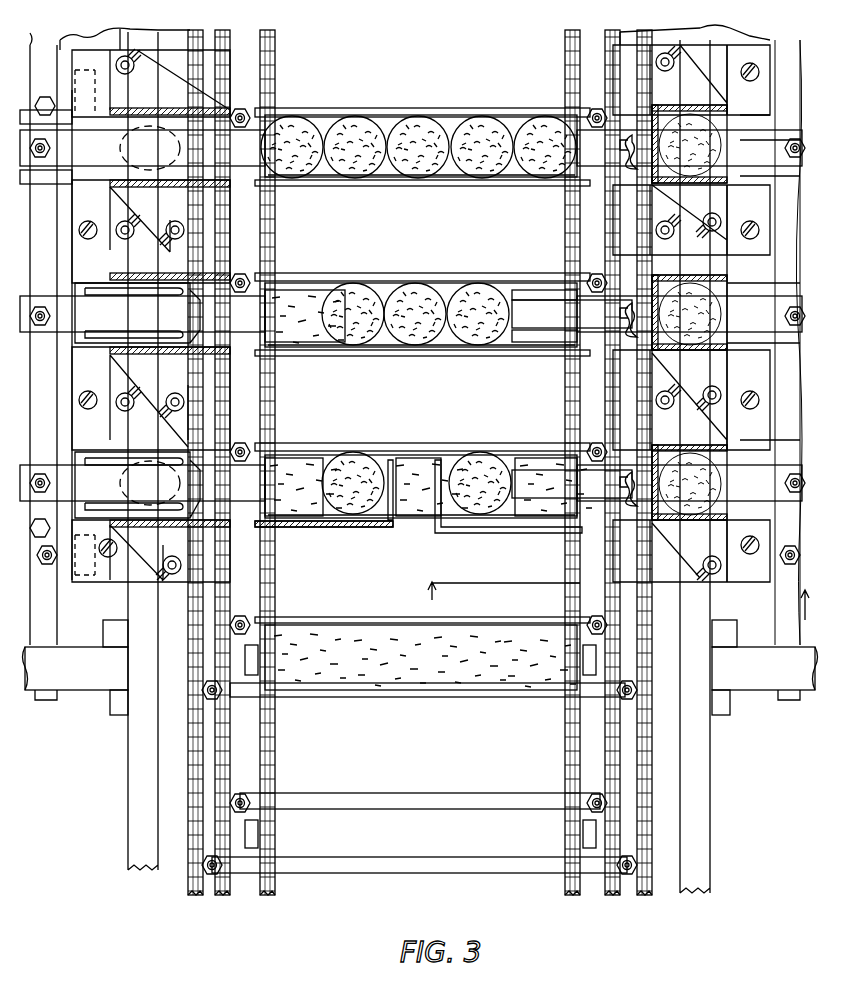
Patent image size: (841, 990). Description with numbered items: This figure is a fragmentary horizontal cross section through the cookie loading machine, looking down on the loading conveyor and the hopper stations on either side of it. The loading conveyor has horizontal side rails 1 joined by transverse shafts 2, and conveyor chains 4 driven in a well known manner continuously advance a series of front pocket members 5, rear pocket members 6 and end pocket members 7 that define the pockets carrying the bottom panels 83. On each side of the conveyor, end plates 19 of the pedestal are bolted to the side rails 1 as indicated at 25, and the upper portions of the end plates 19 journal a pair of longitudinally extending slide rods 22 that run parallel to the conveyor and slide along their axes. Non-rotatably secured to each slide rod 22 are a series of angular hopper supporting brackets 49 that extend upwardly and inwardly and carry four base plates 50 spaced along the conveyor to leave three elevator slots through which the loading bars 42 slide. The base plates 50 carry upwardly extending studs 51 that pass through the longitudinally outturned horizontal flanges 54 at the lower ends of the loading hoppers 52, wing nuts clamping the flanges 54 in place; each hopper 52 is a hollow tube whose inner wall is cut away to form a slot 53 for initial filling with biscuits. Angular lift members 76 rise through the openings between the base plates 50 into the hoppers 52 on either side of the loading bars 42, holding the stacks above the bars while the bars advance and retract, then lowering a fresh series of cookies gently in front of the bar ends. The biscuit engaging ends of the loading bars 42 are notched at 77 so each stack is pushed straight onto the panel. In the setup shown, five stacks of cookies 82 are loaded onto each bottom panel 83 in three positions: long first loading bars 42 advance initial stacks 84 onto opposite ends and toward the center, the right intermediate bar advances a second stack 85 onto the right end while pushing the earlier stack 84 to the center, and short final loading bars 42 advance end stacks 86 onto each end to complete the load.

The side rail 1 is at (145, 790).
The transverse shaft 2 is at (607, 612).
The conveyor chain 4 is at (50, 183).
The front pocket member 5 is at (345, 620).
The rear pocket member 6 is at (350, 693).
The end pocket member 7 is at (260, 660).
The end plate 19 is at (88, 700).
The slide rod 22 is at (75, 602).
The bolted connection 25 is at (110, 715).
The loading bar 42 is at (550, 320).
The hopper supporting bracket 49 is at (780, 78).
The base plate 50 is at (622, 93).
The stud 51 is at (172, 400).
The loading hopper 52 is at (700, 280).
The slot 53 is at (642, 290).
The flange 54 is at (190, 402).
The lift member 76 is at (100, 295).
The notch 77 is at (325, 520).
The stack of cookies 82 is at (484, 165).
The bottom panel 83 is at (308, 342).
The initial stack 84 is at (425, 135).
The second stack 85 is at (484, 125).
The end stack 86 is at (296, 170).